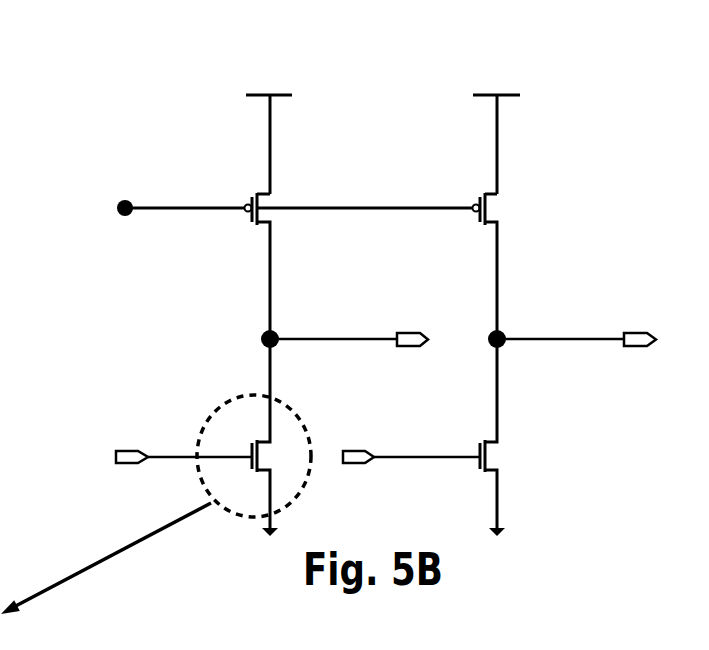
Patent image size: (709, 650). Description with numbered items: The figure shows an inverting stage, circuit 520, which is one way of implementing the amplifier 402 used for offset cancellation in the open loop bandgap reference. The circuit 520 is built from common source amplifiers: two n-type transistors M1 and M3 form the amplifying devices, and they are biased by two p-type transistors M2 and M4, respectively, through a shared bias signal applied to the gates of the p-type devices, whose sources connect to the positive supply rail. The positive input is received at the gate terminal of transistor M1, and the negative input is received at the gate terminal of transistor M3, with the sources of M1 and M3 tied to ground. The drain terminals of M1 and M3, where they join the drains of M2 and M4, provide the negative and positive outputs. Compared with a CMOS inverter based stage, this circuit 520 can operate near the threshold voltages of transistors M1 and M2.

The inverting stage 520 is at (40, 76).
The amplifier 402 is at (341, 334).
The n-type transistor M1 is at (213, 437).
The p-type transistor M2 is at (274, 266).
The n-type transistor M3 is at (439, 437).
The p-type transistor M4 is at (502, 266).